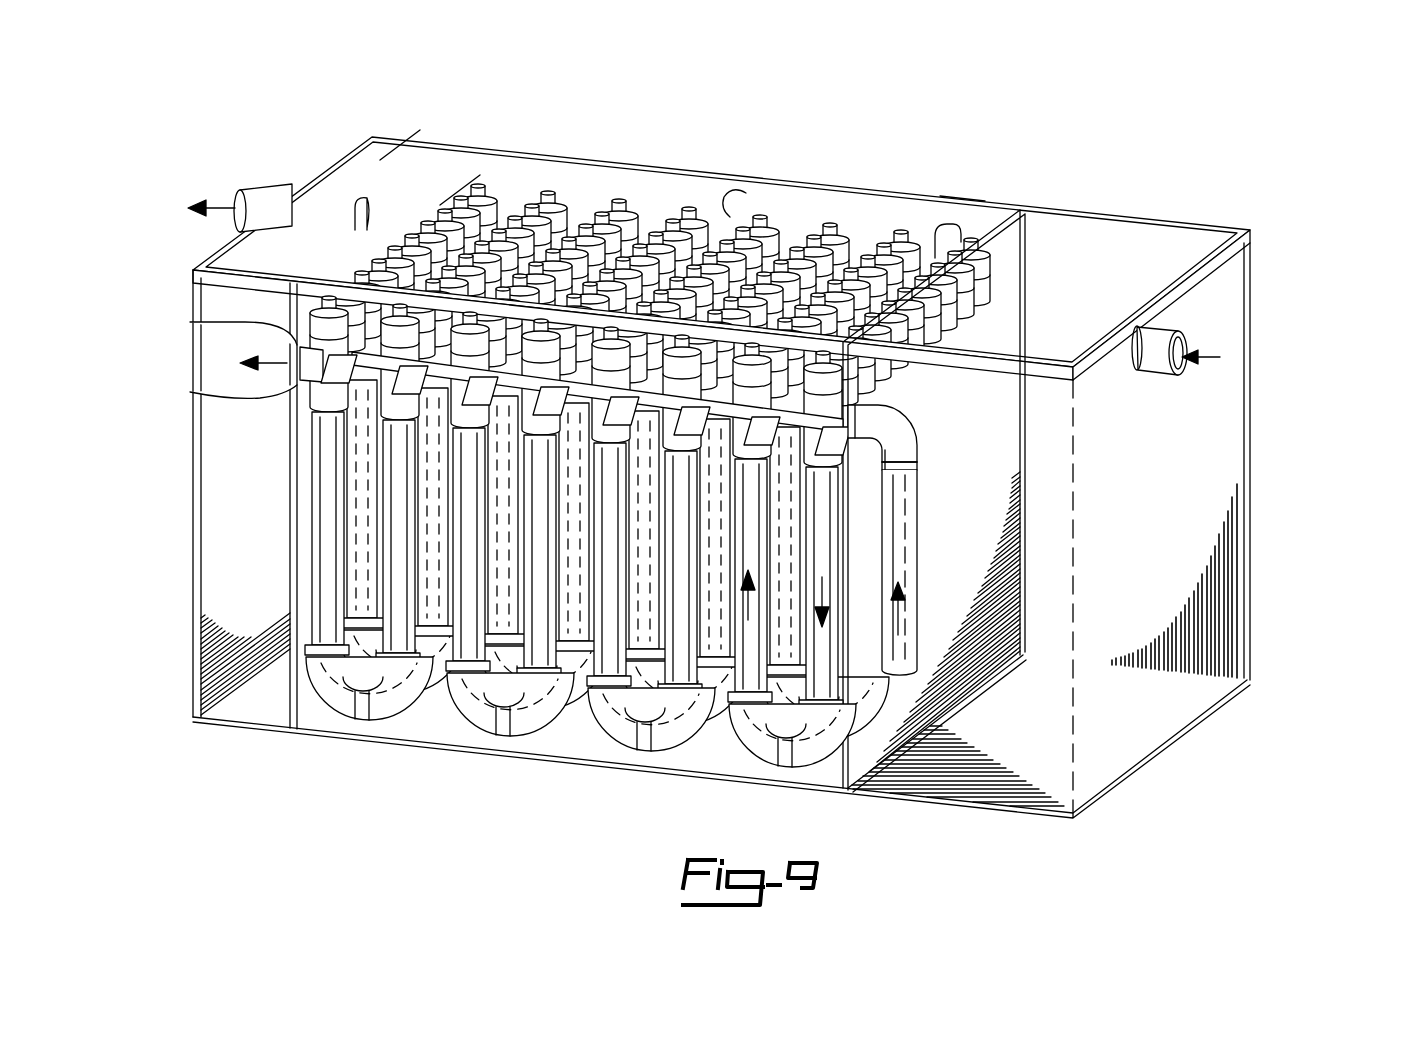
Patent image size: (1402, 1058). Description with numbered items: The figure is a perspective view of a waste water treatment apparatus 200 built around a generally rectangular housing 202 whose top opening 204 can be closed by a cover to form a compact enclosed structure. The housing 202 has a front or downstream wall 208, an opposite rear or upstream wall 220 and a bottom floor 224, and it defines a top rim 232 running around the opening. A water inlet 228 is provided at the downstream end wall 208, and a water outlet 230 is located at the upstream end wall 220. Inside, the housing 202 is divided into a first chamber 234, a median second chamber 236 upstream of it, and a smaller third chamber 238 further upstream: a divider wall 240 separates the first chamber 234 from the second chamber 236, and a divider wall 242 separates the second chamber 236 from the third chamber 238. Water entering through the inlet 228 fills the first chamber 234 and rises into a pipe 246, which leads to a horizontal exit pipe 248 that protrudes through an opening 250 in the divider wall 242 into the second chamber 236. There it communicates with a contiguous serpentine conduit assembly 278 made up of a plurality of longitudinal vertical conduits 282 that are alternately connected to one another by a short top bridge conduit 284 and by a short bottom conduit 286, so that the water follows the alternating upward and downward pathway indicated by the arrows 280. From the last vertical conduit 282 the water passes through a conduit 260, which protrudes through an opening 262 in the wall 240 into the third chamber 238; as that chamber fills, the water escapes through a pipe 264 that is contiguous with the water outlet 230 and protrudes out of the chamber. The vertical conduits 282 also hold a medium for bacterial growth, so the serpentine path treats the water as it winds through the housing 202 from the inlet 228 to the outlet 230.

The apparatus 200 is at (1055, 155).
The housing 202 is at (1262, 680).
The top opening 204 is at (818, 222).
The front or downstream wall 208 is at (1208, 445).
The rear or upstream wall 220 is at (228, 474).
The bottom floor 224 is at (587, 745).
The water inlet 228 is at (1202, 326).
The water outlet 230 is at (367, 198).
The top rim 232 is at (960, 205).
The first chamber 234 is at (1114, 242).
The second chamber 236 is at (664, 203).
The third chamber 238 is at (400, 172).
The divider wall 240 is at (1006, 240).
The divider wall 242 is at (456, 188).
The pipe 246 is at (908, 585).
The horizontal exit pipe 248 is at (832, 416).
The opening 250 is at (908, 462).
The conduit 260 is at (192, 392).
The opening 262 is at (190, 323).
The pipe 264 is at (262, 195).
The serpentine conduit assembly 278 is at (738, 214).
The arrows 280 is at (810, 635).
The longitudinal vertical conduits 282 is at (533, 610).
The short top bridge conduit 284 is at (563, 398).
The short bottom conduit 286 is at (737, 740).